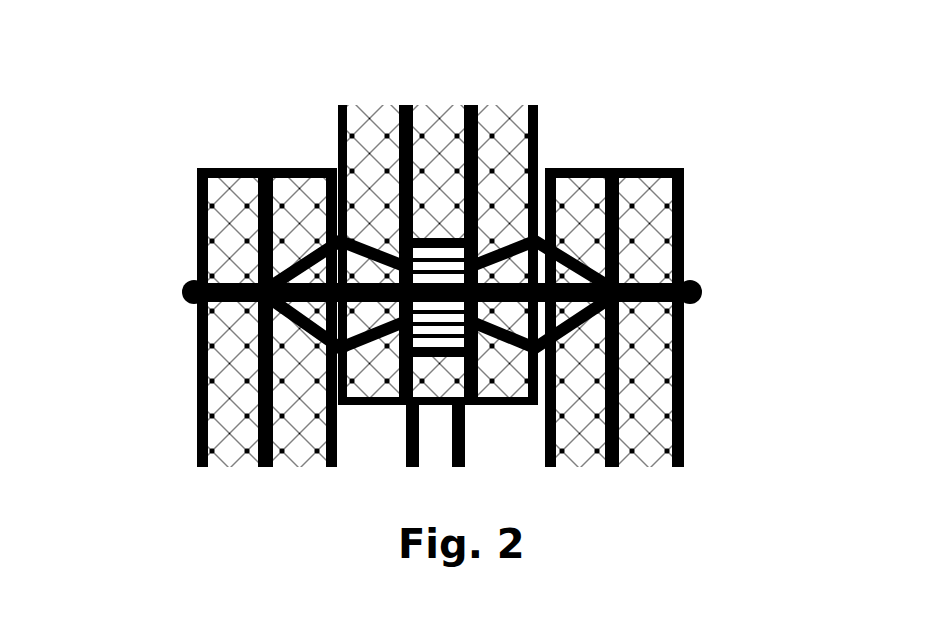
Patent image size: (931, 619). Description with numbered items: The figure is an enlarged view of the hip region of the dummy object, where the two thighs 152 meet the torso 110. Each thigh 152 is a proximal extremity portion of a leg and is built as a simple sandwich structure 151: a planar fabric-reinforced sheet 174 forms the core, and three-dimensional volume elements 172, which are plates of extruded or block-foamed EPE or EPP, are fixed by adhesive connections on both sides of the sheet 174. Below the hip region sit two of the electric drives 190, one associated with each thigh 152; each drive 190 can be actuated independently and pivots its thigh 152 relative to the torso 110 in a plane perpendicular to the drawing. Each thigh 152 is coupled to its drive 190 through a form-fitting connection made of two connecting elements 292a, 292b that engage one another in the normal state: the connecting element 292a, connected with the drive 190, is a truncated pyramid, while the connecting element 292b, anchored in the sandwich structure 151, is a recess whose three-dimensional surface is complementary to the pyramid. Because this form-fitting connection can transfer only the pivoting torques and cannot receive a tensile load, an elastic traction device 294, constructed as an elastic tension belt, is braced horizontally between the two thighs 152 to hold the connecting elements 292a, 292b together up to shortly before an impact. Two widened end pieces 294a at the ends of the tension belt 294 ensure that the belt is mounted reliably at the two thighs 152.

The torso 110 is at (486, 58).
The sandwich structure 151 is at (333, 156).
The thigh 152 is at (150, 258).
The three-dimensional volume elements 172 is at (368, 105).
The fabric-reinforced sheet 174 is at (470, 103).
The electric drive 190 is at (357, 345).
The connecting element 292a is at (578, 272).
The connecting element 292b is at (583, 343).
The elastic traction device 294 is at (440, 246).
The widened end pieces 294a is at (188, 298).